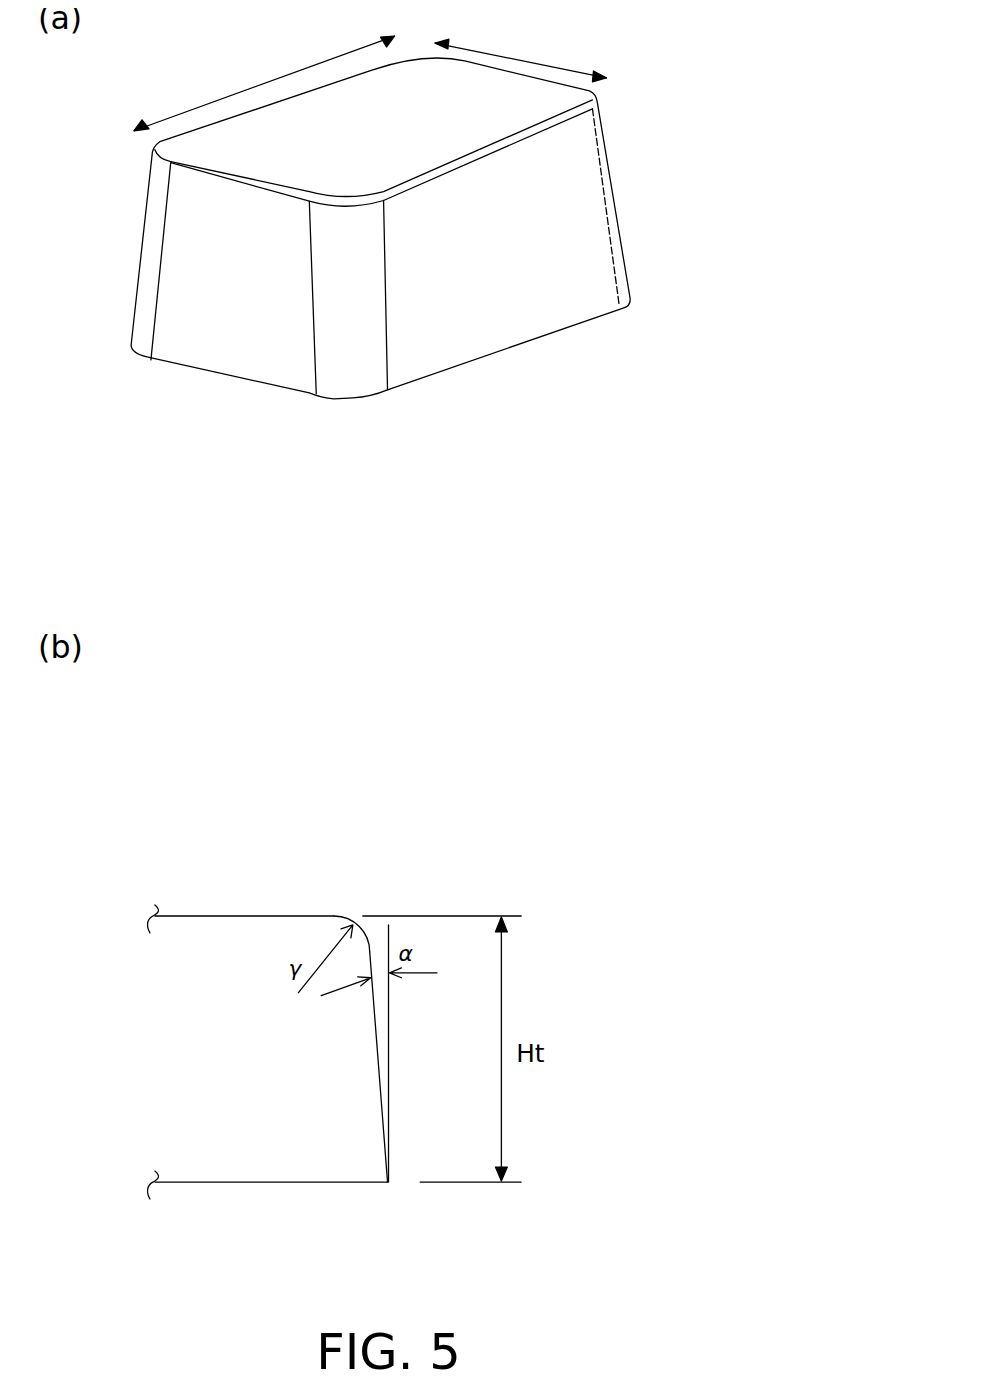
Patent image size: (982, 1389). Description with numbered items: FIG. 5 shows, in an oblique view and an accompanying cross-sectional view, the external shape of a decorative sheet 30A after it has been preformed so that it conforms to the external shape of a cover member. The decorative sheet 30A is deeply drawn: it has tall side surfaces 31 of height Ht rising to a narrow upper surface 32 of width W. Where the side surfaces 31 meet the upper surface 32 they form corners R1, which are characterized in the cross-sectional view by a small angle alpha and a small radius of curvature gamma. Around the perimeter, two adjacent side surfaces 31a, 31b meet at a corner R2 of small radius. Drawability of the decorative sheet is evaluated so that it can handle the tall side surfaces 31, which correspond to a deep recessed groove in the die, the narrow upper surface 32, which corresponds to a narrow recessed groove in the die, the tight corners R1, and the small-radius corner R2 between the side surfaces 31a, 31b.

The decorative sheet 30A is at (446, 280).
The side surfaces 31 is at (450, 330).
The side surface 31a is at (428, 347).
The side surface 31b is at (282, 348).
The upper surface 32 is at (436, 517).
The corners R1 is at (437, 124).
The corner R2 is at (358, 355).